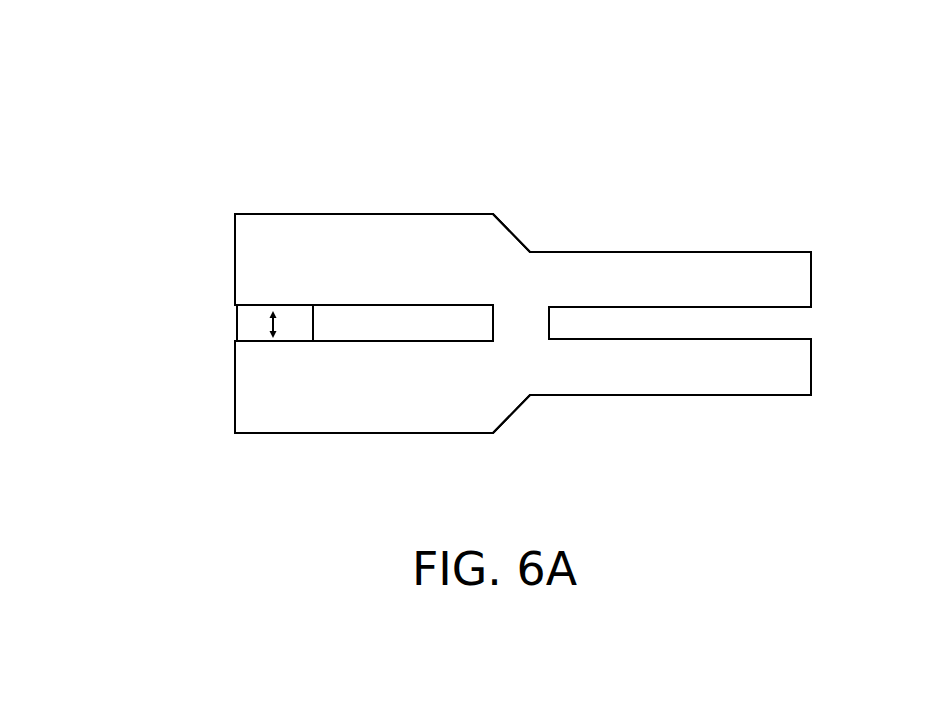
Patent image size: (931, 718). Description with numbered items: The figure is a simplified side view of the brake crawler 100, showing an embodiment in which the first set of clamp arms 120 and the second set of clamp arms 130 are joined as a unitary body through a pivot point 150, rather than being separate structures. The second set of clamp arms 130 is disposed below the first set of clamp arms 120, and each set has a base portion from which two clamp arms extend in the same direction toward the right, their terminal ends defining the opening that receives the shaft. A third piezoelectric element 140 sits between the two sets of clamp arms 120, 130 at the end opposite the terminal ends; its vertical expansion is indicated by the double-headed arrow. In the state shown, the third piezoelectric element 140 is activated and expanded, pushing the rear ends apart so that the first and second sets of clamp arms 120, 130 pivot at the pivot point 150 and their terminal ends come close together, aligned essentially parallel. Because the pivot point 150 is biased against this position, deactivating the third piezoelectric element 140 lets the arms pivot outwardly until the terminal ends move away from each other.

The brake crawler 100 is at (177, 110).
The first set of clamp arms 120 is at (377, 214).
The second set of clamp arms 130 is at (367, 433).
The third piezoelectric element 140 is at (236, 318).
The pivot point 150 is at (526, 314).